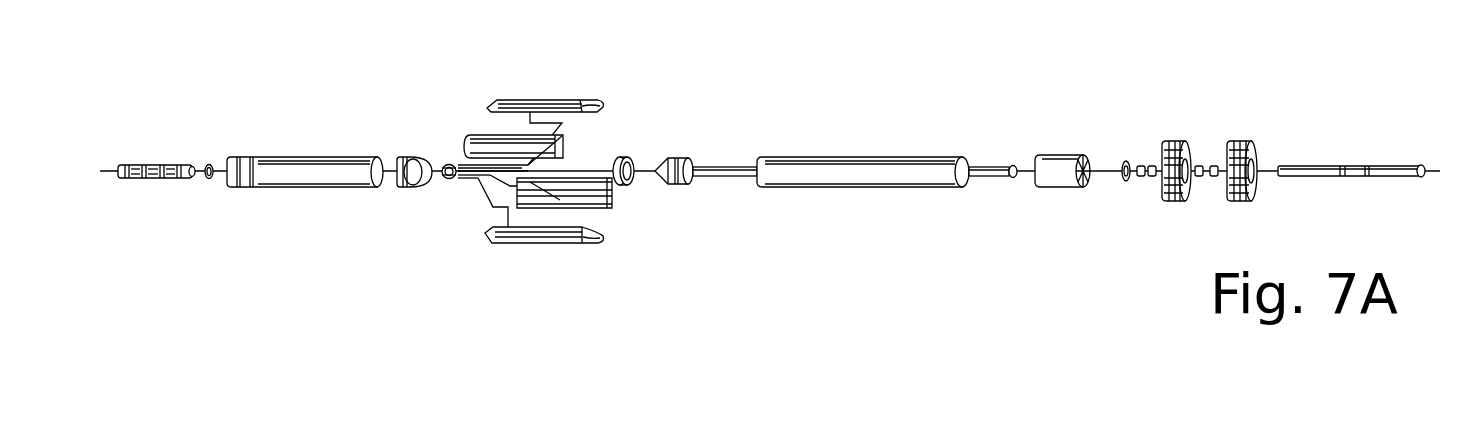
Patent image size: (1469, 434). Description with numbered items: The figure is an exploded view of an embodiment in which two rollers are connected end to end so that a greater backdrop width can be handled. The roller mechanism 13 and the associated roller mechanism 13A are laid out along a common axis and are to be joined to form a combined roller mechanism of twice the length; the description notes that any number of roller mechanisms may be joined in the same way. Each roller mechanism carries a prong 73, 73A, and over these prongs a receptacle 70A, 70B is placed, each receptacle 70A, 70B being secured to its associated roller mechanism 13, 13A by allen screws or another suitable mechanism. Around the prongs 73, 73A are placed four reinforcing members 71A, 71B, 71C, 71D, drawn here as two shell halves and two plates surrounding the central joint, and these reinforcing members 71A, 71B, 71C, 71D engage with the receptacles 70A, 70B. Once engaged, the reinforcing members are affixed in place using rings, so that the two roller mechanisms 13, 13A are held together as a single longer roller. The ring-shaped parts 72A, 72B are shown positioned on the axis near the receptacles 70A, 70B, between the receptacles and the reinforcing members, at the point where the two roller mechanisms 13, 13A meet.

The roller mechanism 13 is at (846, 163).
The roller mechanism 13A is at (281, 188).
The receptacle 70A is at (404, 156).
The receptacle 70B is at (677, 157).
The reinforcing member 71A is at (545, 239).
The reinforcing member 71B is at (614, 201).
The reinforcing member 71C is at (510, 99).
The reinforcing member 71D is at (468, 141).
The first ring seal 72A is at (623, 157).
The second ring seal 72B is at (449, 180).
The prong 73 is at (745, 163).
The prong 73A is at (439, 184).